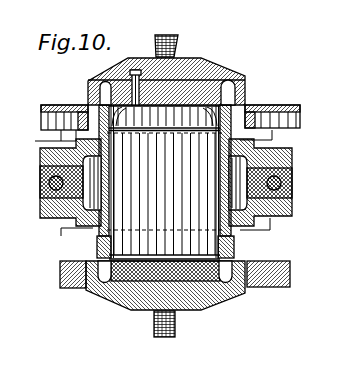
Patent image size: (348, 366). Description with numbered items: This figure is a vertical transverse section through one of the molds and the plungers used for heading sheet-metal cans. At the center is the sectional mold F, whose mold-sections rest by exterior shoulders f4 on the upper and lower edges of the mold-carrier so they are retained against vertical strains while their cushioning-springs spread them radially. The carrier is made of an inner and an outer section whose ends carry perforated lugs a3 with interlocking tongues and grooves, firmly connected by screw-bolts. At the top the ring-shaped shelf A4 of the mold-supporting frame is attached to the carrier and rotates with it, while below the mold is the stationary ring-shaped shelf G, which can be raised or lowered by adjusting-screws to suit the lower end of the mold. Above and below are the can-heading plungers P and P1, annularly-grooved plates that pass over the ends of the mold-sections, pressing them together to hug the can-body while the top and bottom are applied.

The can-heading plunger P is at (80, 72).
The can-heading plunger P1 is at (122, 284).
The ring-shaped shelf A4 is at (42, 108).
The perforated lugs a3 is at (163, 186).
The exterior shoulders f4 is at (274, 115).
The sectional mold F is at (96, 240).
The stationary ring-shaped shelf G is at (52, 270).